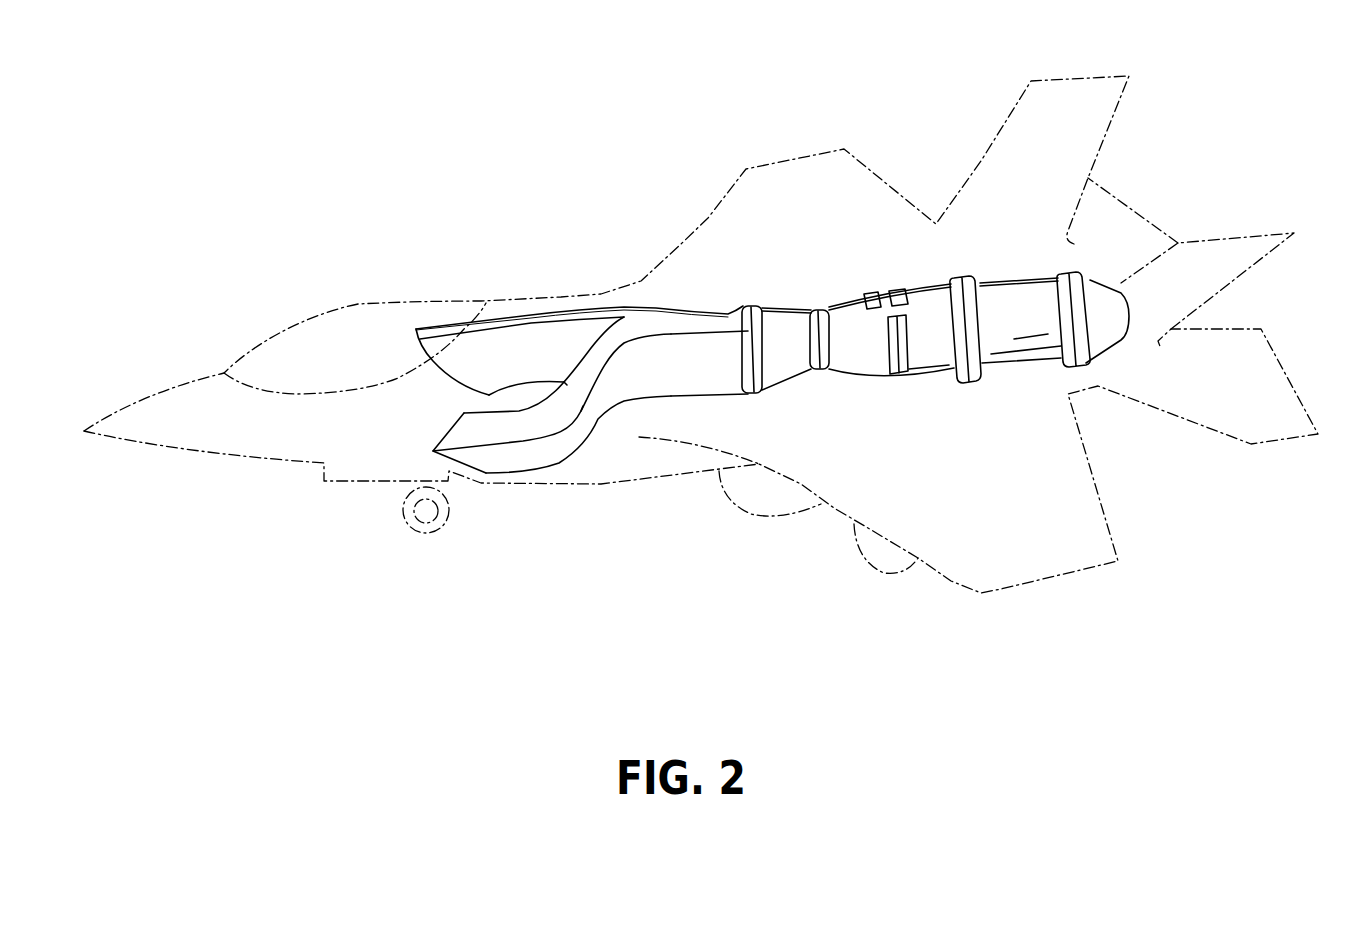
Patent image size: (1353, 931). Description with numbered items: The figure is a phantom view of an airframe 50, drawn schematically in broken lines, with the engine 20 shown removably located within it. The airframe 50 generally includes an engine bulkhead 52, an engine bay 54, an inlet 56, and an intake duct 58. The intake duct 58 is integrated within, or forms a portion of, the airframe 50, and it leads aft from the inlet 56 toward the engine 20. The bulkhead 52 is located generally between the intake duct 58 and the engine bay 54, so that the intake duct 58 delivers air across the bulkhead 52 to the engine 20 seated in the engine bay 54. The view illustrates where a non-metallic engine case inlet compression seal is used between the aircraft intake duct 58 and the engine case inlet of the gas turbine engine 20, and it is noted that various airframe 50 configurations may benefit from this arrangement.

The engine 20 is at (772, 404).
The airframe 50 is at (797, 172).
The engine bulkhead 52 is at (747, 392).
The engine bay 54 is at (845, 382).
The inlet 56 is at (470, 458).
The intake duct 58 is at (567, 415).